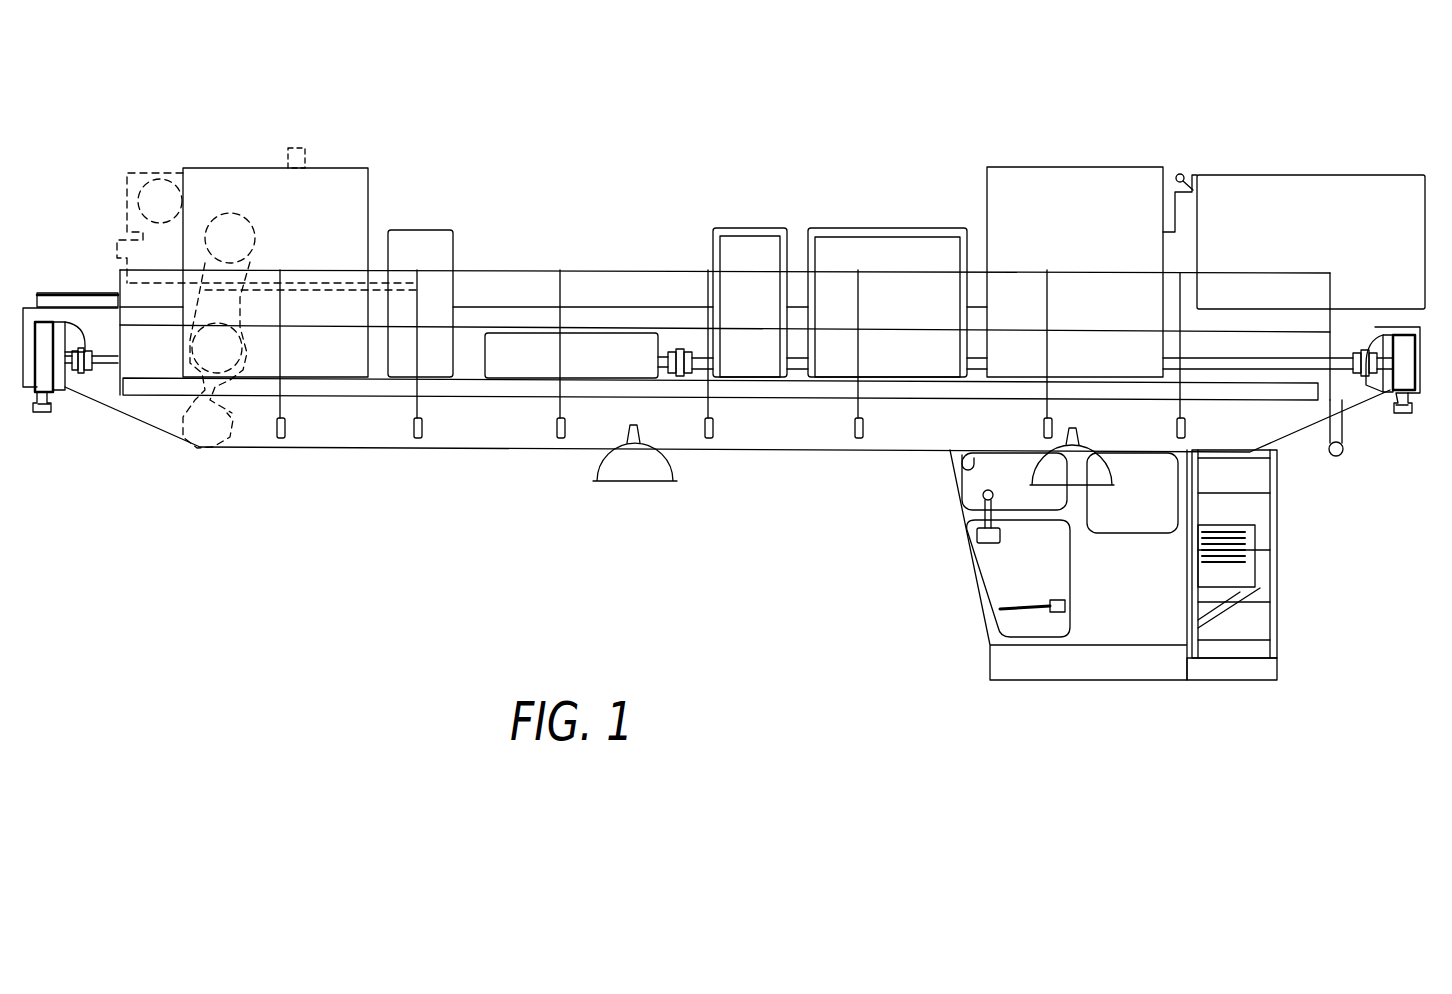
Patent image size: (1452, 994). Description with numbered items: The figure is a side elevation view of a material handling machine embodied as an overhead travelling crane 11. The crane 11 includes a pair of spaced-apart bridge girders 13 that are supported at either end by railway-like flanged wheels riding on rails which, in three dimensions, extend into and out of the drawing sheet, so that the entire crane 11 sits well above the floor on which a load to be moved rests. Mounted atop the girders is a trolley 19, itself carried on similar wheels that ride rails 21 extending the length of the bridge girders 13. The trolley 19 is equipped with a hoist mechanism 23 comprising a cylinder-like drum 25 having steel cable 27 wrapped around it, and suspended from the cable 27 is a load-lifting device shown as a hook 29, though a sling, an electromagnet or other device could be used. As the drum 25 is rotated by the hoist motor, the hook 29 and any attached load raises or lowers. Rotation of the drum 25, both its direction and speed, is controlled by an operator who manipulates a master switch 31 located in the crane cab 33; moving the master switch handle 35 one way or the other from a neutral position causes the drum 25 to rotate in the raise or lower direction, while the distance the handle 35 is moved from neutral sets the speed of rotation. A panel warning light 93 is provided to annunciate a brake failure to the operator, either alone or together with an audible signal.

The overhead travelling crane 11 is at (697, 197).
The bridge girders 13 is at (492, 438).
The trolley 19 is at (163, 172).
The rails 21 is at (90, 292).
The hoist mechanism 23 is at (228, 176).
The drum 25 is at (235, 240).
The steel cable 27 is at (250, 308).
The hook 29 is at (200, 448).
The master switch 31 is at (982, 541).
The crane cab 33 is at (1000, 573).
The master switch handle 35 is at (985, 493).
The panel warning light 93 is at (972, 457).